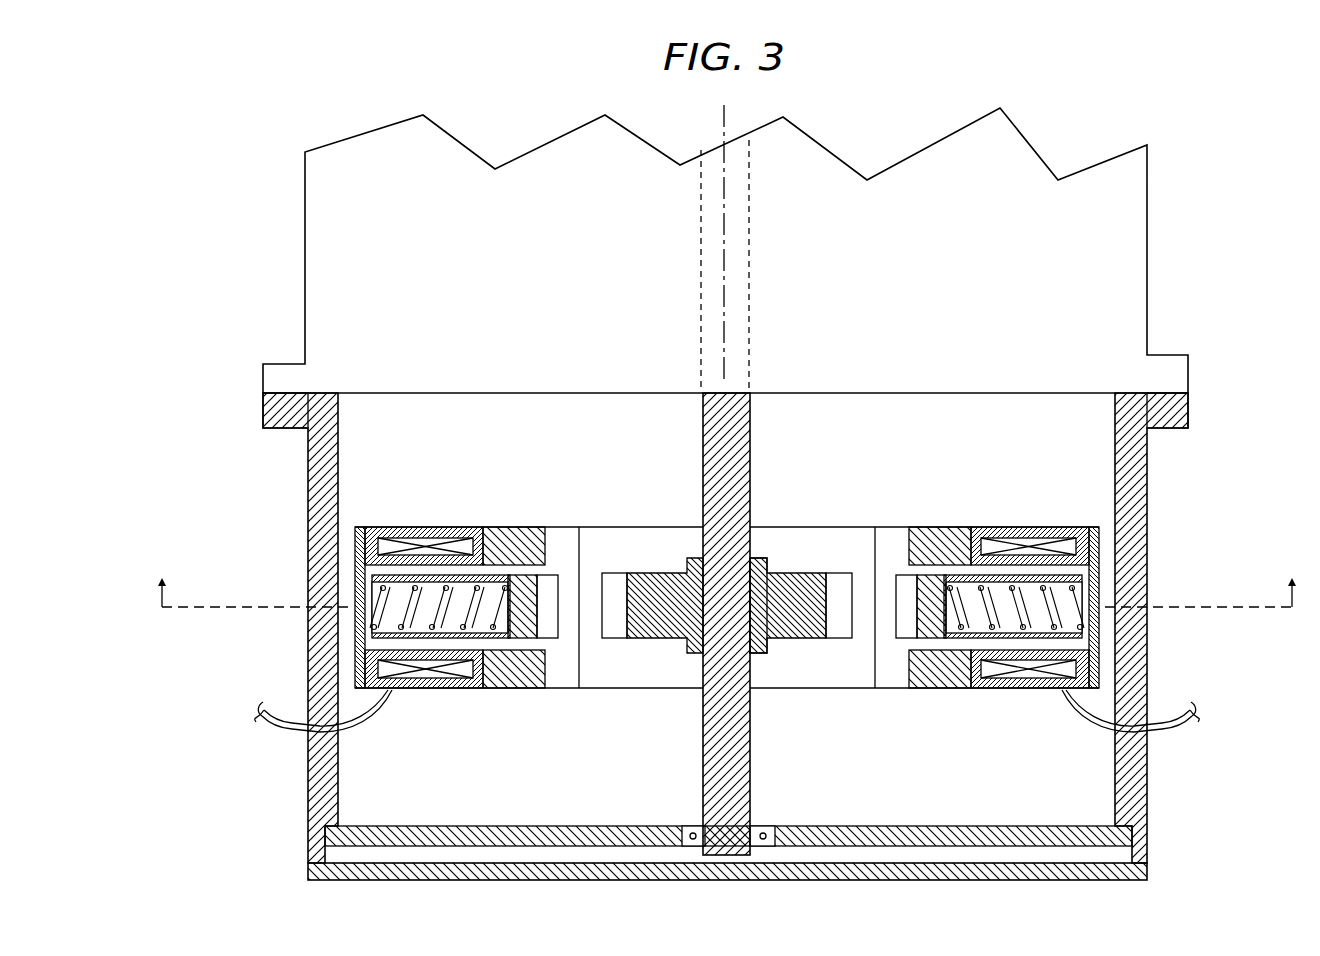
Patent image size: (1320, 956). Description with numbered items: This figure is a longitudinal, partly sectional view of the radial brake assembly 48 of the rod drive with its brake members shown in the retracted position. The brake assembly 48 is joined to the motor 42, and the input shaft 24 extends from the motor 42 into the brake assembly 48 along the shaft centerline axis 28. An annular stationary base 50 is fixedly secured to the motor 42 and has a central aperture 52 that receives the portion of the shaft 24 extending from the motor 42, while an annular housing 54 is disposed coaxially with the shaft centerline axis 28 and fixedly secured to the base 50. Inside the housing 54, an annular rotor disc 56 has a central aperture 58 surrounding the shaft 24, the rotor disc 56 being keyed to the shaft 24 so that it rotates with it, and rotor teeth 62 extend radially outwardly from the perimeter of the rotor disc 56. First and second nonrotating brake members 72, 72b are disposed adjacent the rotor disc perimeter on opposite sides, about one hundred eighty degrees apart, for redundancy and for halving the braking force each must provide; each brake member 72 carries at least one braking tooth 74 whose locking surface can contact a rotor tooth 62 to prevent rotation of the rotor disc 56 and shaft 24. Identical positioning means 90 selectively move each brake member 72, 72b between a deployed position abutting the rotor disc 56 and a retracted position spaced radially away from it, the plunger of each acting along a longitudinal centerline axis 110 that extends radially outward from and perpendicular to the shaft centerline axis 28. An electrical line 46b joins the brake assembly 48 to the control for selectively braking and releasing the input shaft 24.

The motor 42 is at (1152, 241).
The shaft centerline axis 28 is at (724, 283).
The input shaft 24 is at (750, 477).
The stationary base 50 is at (265, 413).
The central aperture 52 is at (1113, 407).
The housing 54 is at (308, 508).
The brake assembly 48 is at (1152, 468).
The central aperture 58 is at (703, 653).
The rotor teeth 62 is at (837, 572).
The rotor disc 56 is at (777, 640).
The brake member 72 is at (901, 645).
The second brake member 72b is at (553, 560).
The braking tooth 74 is at (893, 572).
The positioning means 90 is at (430, 695).
The electrical line 46b is at (260, 747).
The longitudinal centerline axis 110 is at (1182, 605).